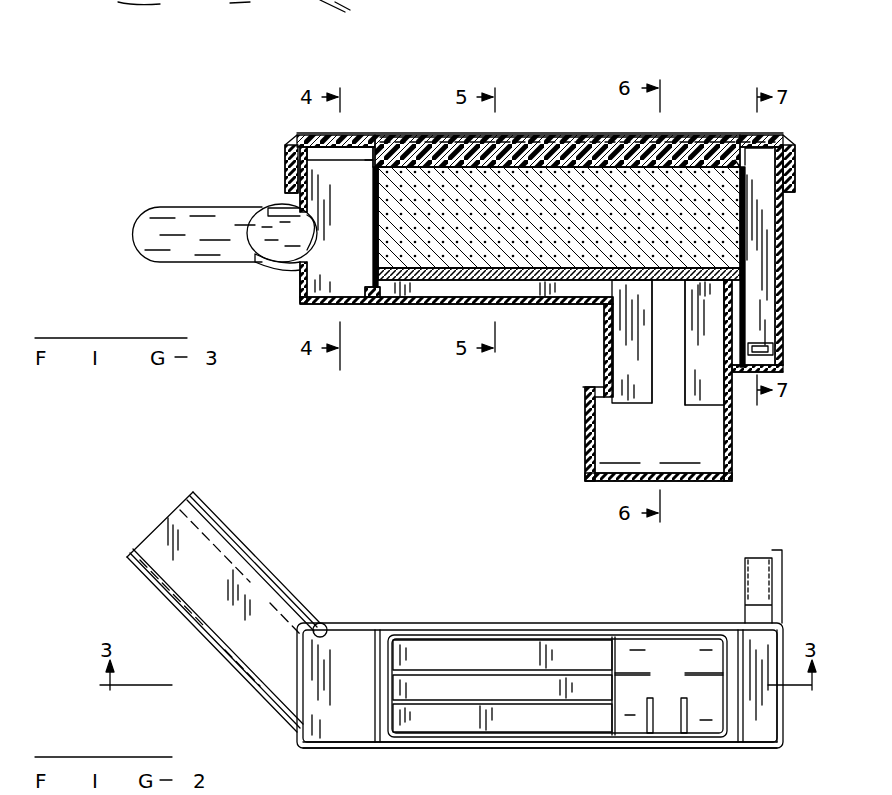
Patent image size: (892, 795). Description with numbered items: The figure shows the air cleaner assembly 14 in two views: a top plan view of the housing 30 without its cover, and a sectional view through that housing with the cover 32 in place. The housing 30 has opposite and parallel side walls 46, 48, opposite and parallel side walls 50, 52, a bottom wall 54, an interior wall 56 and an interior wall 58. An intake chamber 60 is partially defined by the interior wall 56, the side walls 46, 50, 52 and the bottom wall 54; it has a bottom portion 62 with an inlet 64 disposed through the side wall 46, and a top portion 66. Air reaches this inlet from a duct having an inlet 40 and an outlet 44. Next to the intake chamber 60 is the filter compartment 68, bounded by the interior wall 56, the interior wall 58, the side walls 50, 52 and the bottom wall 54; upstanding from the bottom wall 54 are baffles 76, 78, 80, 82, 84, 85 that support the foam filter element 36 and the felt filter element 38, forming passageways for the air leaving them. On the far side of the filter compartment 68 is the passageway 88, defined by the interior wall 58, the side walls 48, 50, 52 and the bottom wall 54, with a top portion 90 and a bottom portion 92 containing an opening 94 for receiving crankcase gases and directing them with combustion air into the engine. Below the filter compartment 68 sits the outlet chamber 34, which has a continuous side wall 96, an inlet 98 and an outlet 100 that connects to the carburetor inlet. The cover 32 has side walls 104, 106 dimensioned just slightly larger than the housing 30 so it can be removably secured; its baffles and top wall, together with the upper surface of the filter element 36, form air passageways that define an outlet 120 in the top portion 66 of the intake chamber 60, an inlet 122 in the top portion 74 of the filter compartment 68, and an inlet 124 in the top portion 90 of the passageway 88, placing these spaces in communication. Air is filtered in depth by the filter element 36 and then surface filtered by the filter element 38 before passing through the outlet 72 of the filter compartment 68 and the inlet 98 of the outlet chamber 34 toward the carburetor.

In FIG. 3, the air cleaner assembly 14 is at (665, 78).
In FIG. 3, the housing 30 is at (303, 304).
In FIG. 2, the housing 30 is at (350, 622).
In FIG. 3, the cover 32 is at (660, 133).
In FIG. 3, the outlet chamber 34 is at (705, 445).
In FIG. 3, the filter element 36 is at (546, 218).
In FIG. 3, the filter element 38 is at (440, 262).
In FIG. 3, the inlet 40 is at (140, 232).
In FIG. 2, the inlet 40 is at (183, 500).
In FIG. 3, the outlet 44 is at (265, 210).
In FIG. 2, the outlet 44 is at (326, 624).
In FIG. 3, the side wall 46 is at (300, 290).
In FIG. 2, the side wall 46 is at (297, 740).
In FIG. 3, the side wall 48 is at (785, 240).
In FIG. 2, the side wall 48 is at (783, 707).
In FIG. 2, the side wall 50 is at (565, 750).
In FIG. 2, the side wall 52 is at (433, 633).
In FIG. 3, the bottom wall 54 is at (407, 304).
In FIG. 3, the interior wall 56 is at (383, 228).
In FIG. 2, the interior wall 56 is at (370, 648).
In FIG. 3, the interior wall 58 is at (740, 232).
In FIG. 2, the interior wall 58 is at (745, 672).
In FIG. 3, the intake chamber 60 is at (352, 261).
In FIG. 2, the intake chamber 60 is at (352, 701).
In FIG. 3, the bottom portion 62 is at (368, 298).
In FIG. 3, the inlet 64 is at (318, 220).
In FIG. 3, the top portion 66 is at (318, 155).
In FIG. 3, the filter compartment 68 is at (485, 160).
In FIG. 3, the outlet 72 is at (667, 294).
In FIG. 3, the top portion 74 is at (398, 180).
In FIG. 3, the baffle 76 is at (624, 322).
In FIG. 2, the baffle 76 is at (440, 668).
In FIG. 2, the baffle 78 is at (445, 700).
In FIG. 3, the baffle 80 is at (717, 335).
In FIG. 2, the baffle 80 is at (697, 668).
In FIG. 2, the baffle 82 is at (640, 715).
In FIG. 2, the baffle 84 is at (672, 716).
In FIG. 3, the baffle 85 is at (400, 282).
In FIG. 2, the baffle 85 is at (530, 635).
In FIG. 3, the passageway 88 is at (770, 287).
In FIG. 2, the passageway 88 is at (765, 728).
In FIG. 3, the top portion 90 is at (745, 152).
In FIG. 3, the bottom portion 92 is at (775, 318).
In FIG. 3, the opening 94 is at (775, 348).
In FIG. 2, the opening 94 is at (752, 572).
In FIG. 3, the continuous side wall 96 is at (604, 355).
In FIG. 3, the inlet 98 is at (650, 385).
In FIG. 3, the outlet 100 is at (590, 455).
In FIG. 3, the side wall 104 is at (793, 163).
In FIG. 3, the side wall 106 is at (290, 148).
In FIG. 3, the outlet 120 is at (373, 148).
In FIG. 3, the inlet 122 is at (373, 168).
In FIG. 3, the inlet 124 is at (740, 167).